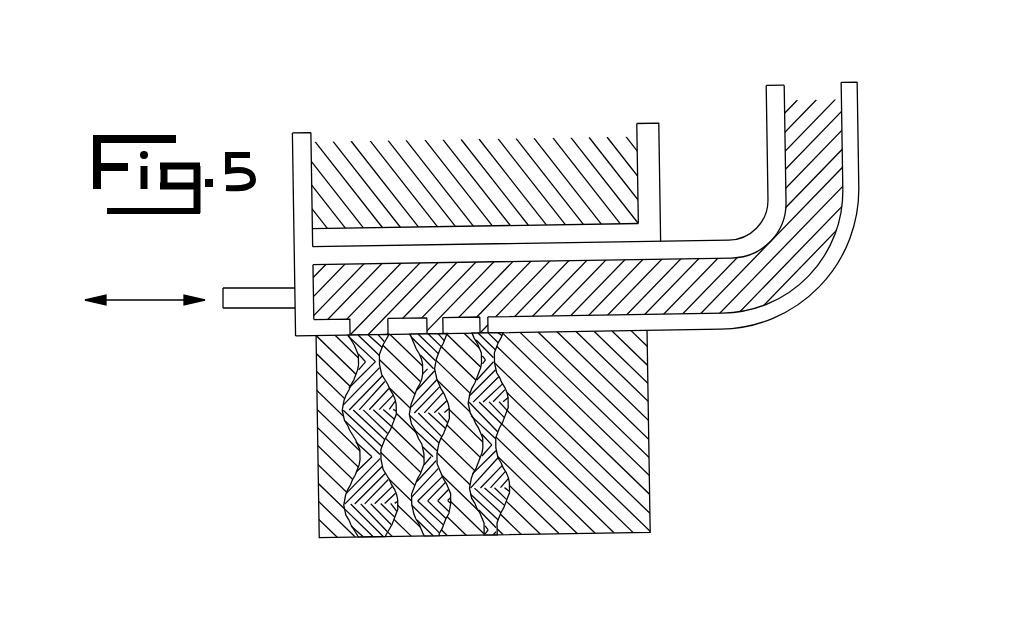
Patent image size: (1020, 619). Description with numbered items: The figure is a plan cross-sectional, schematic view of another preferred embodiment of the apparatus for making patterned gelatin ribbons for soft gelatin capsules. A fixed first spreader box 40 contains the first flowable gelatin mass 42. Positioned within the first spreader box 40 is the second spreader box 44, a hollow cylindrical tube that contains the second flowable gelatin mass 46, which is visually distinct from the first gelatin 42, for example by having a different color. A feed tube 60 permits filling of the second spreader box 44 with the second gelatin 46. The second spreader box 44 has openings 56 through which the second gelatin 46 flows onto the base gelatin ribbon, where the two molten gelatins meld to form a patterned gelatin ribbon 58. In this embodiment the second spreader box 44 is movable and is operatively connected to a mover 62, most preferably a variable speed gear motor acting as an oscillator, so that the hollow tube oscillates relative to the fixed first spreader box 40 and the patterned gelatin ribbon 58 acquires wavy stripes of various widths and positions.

The first spreader box 40 is at (653, 137).
The first flowable gelatin mass 42 is at (553, 157).
The second spreader box 44 is at (704, 321).
The second flowable gelatin mass 46 is at (820, 130).
The openings 56 is at (483, 412).
The patterned gelatin ribbon 58 is at (653, 457).
The feed tube 60 is at (852, 95).
The mover 62 is at (223, 291).